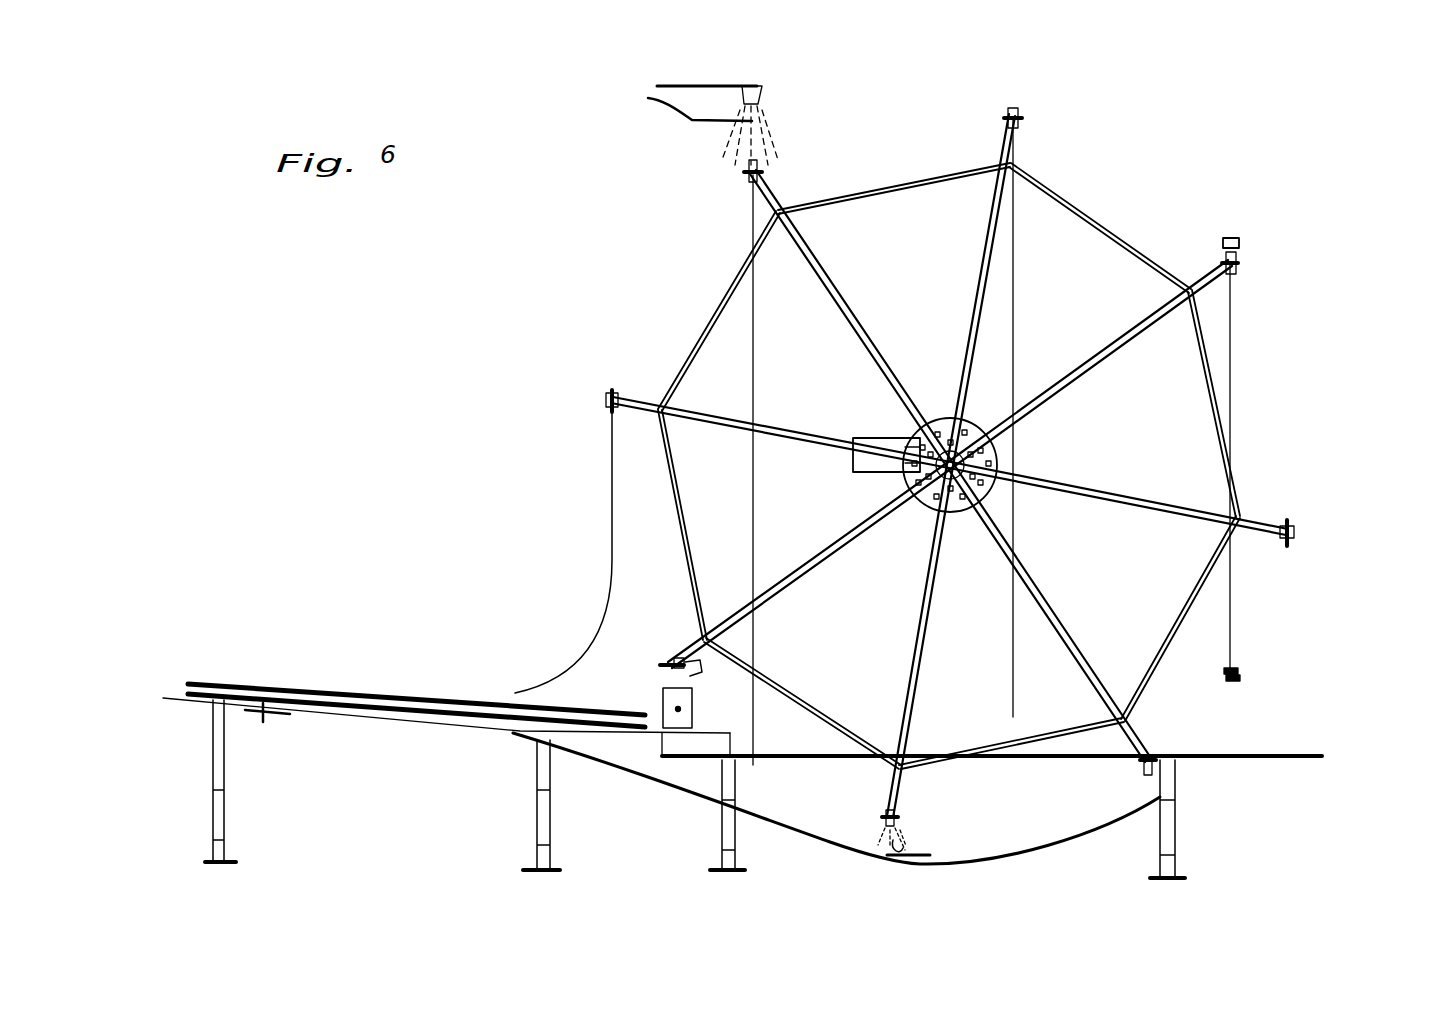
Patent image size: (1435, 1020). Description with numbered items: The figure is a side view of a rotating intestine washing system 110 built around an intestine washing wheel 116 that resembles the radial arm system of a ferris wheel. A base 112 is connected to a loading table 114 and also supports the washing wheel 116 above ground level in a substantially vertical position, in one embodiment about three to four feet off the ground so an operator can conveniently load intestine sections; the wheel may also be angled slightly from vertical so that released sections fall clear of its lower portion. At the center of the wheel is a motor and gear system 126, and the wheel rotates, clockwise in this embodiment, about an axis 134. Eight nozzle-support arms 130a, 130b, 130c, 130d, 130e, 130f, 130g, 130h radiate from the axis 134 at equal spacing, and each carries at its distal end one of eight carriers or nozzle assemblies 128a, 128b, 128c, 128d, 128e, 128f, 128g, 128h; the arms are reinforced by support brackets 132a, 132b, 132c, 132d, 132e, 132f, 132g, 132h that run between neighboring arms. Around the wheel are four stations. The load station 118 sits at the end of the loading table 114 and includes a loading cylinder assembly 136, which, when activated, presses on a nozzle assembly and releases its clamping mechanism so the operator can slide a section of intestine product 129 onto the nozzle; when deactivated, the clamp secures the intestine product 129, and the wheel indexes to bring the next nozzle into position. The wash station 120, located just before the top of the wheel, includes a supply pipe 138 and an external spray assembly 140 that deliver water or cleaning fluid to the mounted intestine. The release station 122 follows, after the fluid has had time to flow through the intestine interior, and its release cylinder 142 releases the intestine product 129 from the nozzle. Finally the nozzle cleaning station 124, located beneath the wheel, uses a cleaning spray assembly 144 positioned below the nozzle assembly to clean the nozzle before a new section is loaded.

The rotating intestine washing system 110 is at (1316, 146).
The base 112 is at (1222, 772).
The loading table 114 is at (362, 728).
The intestine washing wheel 116 is at (1100, 190).
The load station 118 is at (638, 676).
The wash station 120 is at (702, 172).
The release station 122 is at (1278, 280).
The nozzle cleaning station 124 is at (858, 822).
The motor and gear system 126 is at (882, 487).
The nozzle assembly 128a is at (666, 664).
The nozzle assembly 128b is at (612, 395).
The nozzle assembly 128c is at (760, 172).
The nozzle assembly 128d is at (1020, 112).
The nozzle assembly 128e is at (1238, 263).
The nozzle assembly 128f is at (1290, 532).
The nozzle assembly 128g is at (1153, 758).
The nozzle assembly 128h is at (897, 820).
The intestine product 129 is at (612, 515).
The nozzle-support arm 130a is at (778, 604).
The nozzle-support arm 130b is at (826, 430).
The nozzle-support arm 130c is at (860, 312).
The nozzle-support arm 130d is at (990, 245).
The nozzle-support arm 130e is at (1108, 366).
The nozzle-support arm 130f is at (1090, 483).
The nozzle-support arm 130g is at (1072, 630).
The nozzle-support arm 130h is at (922, 672).
The support bracket 132a is at (690, 498).
The support bracket 132b is at (707, 330).
The support bracket 132c is at (880, 178).
The support bracket 132d is at (1112, 228).
The support bracket 132e is at (1242, 500).
The support bracket 132f is at (1203, 570).
The support bracket 132g is at (1062, 740).
The support bracket 132h is at (803, 688).
The axis 134 is at (995, 448).
The loading cylinder assembly 136 is at (692, 672).
The supply pipe 138 is at (648, 98).
The external spray assembly 140 is at (710, 86).
The release cylinder 142 is at (1238, 238).
The cleaning spray assembly 144 is at (917, 848).